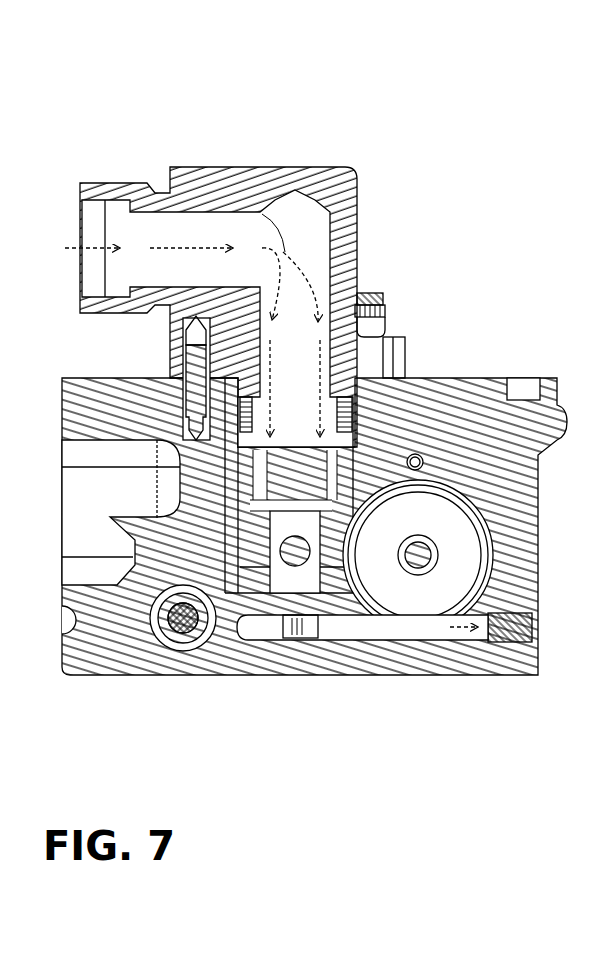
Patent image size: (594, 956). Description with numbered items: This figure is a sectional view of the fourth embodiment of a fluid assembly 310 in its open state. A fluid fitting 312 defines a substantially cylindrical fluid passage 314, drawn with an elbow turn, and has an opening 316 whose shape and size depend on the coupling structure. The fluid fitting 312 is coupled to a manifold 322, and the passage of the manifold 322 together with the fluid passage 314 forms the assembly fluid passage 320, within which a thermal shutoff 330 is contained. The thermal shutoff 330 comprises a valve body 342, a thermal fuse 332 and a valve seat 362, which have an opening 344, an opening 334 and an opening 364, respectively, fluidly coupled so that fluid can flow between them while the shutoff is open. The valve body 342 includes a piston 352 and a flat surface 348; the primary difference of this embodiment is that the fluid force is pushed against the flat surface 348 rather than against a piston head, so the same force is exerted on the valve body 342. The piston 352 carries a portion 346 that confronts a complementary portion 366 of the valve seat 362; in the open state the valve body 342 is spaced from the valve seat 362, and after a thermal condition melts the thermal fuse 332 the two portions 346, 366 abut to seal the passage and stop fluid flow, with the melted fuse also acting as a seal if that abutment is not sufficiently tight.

The fluid assembly 310 is at (312, 397).
The fluid fitting 312 is at (198, 172).
The fluid passage 314 is at (243, 237).
The opening 316 is at (78, 222).
The assembly fluid passage 320 is at (330, 278).
The manifold 322 is at (112, 640).
The thermal shutoff 330 is at (185, 470).
The thermal fuse 332 is at (358, 470).
The thermal fuse opening 334 is at (370, 490).
The valve body 342 is at (380, 295).
The valve body opening 344 is at (185, 349).
The sealing portion of valve body 346 is at (325, 590).
The flat surface 348 is at (232, 348).
The piston 352 is at (185, 505).
The valve seat 362 is at (252, 600).
The valve seat opening 364 is at (300, 540).
The complementary portion of valve seat 366 is at (250, 603).